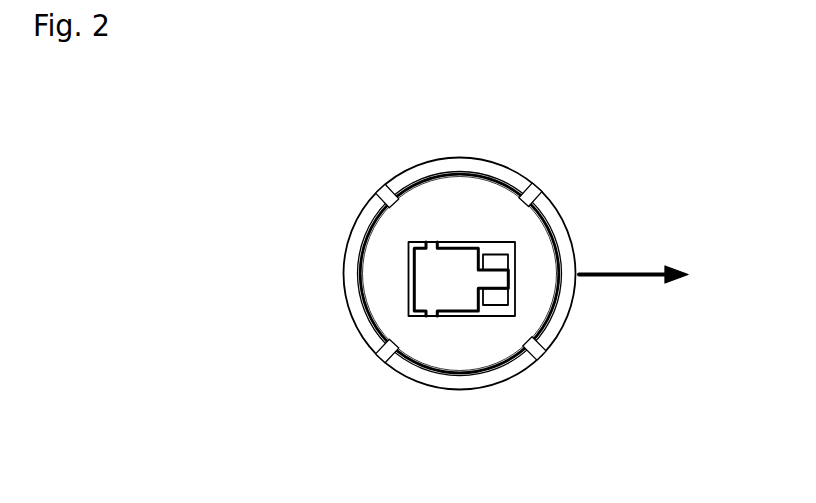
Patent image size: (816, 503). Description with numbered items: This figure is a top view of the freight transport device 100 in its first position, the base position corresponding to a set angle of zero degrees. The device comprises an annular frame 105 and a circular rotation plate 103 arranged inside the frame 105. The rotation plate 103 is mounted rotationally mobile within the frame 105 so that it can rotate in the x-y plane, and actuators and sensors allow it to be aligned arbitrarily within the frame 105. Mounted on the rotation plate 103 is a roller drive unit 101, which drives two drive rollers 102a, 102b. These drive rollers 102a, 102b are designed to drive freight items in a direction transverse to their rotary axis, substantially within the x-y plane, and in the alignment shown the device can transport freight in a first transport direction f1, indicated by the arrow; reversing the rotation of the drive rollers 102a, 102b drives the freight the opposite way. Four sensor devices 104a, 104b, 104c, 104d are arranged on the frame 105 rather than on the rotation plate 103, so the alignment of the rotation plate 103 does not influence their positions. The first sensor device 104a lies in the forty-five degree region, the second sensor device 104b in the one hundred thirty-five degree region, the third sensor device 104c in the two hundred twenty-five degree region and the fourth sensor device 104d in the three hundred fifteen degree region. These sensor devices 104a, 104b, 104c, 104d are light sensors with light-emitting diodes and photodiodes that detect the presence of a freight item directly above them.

The freight transport device 100 is at (409, 156).
The roller drive unit 101 is at (447, 304).
The drive roller 102a is at (500, 298).
The drive roller 102b is at (500, 262).
The rotation plate 103 is at (537, 285).
The first sensor device 104a is at (385, 354).
The second sensor device 104b is at (385, 193).
The third sensor device 104c is at (533, 192).
The fourth sensor device 104d is at (537, 351).
The annular frame 105 is at (356, 245).
The first transport direction f1 is at (633, 287).